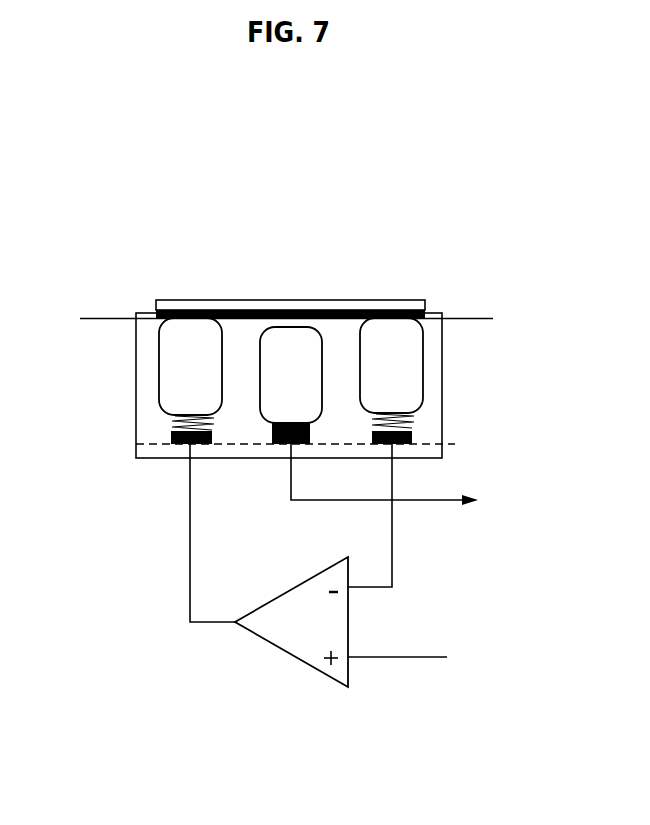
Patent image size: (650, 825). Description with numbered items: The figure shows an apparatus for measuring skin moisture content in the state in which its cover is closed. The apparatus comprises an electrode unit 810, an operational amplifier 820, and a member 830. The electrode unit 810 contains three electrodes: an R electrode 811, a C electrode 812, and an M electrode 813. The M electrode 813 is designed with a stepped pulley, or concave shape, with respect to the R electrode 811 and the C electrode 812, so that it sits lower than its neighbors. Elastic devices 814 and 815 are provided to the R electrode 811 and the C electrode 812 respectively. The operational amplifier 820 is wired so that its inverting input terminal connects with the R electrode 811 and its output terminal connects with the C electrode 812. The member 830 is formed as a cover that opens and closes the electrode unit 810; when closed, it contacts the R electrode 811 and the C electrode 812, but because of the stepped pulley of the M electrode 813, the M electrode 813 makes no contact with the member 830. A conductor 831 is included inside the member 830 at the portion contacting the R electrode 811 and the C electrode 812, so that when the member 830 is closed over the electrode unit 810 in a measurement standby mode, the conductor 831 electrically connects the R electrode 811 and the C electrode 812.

The electrode unit 810 is at (136, 458).
The R electrode 811 is at (423, 360).
The C electrode 812 is at (159, 360).
The M electrode 813 is at (321, 336).
The elastic device 814 is at (410, 421).
The elastic device 815 is at (180, 421).
The operational amplifier 820 is at (290, 655).
The member 830 is at (222, 300).
The conductor 831 is at (382, 312).